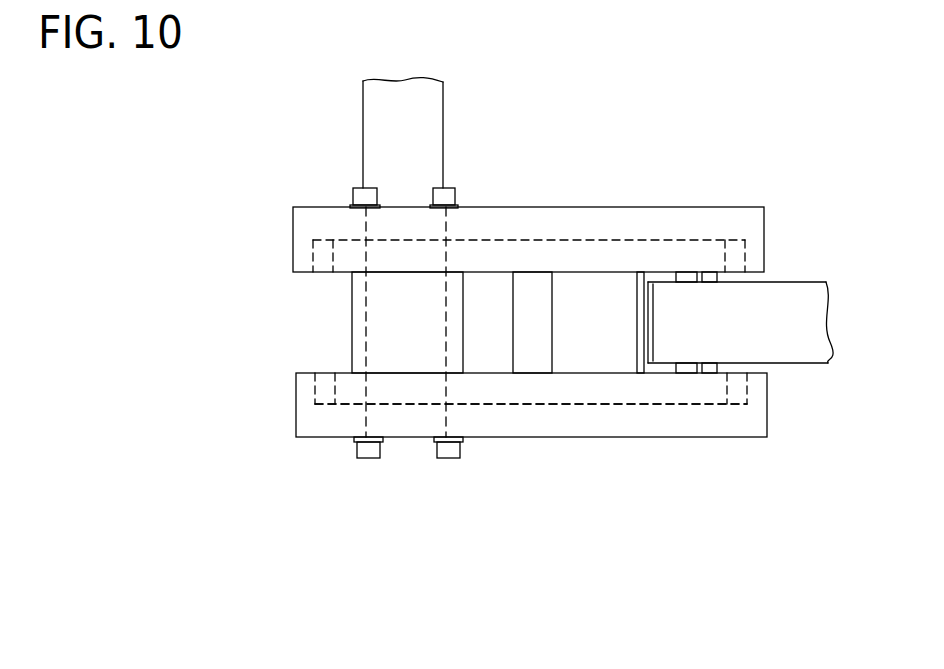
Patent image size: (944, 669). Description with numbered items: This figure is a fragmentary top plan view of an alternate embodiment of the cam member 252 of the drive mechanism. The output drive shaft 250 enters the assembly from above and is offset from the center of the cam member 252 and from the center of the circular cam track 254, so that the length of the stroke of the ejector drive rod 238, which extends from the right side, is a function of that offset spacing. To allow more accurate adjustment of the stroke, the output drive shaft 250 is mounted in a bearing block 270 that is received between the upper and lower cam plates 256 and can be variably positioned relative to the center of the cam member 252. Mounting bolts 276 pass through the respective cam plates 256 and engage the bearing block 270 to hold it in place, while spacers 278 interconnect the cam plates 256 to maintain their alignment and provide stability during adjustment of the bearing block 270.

The ejector drive rod 238 is at (756, 326).
The output drive shaft 250 is at (410, 124).
The cam member 252 is at (258, 304).
The circular cam track 254 is at (652, 404).
The cam plates 256 is at (307, 231).
The bearing block 270 is at (360, 333).
The mounting bolts 276 is at (368, 195).
The spacers 278 is at (641, 272).